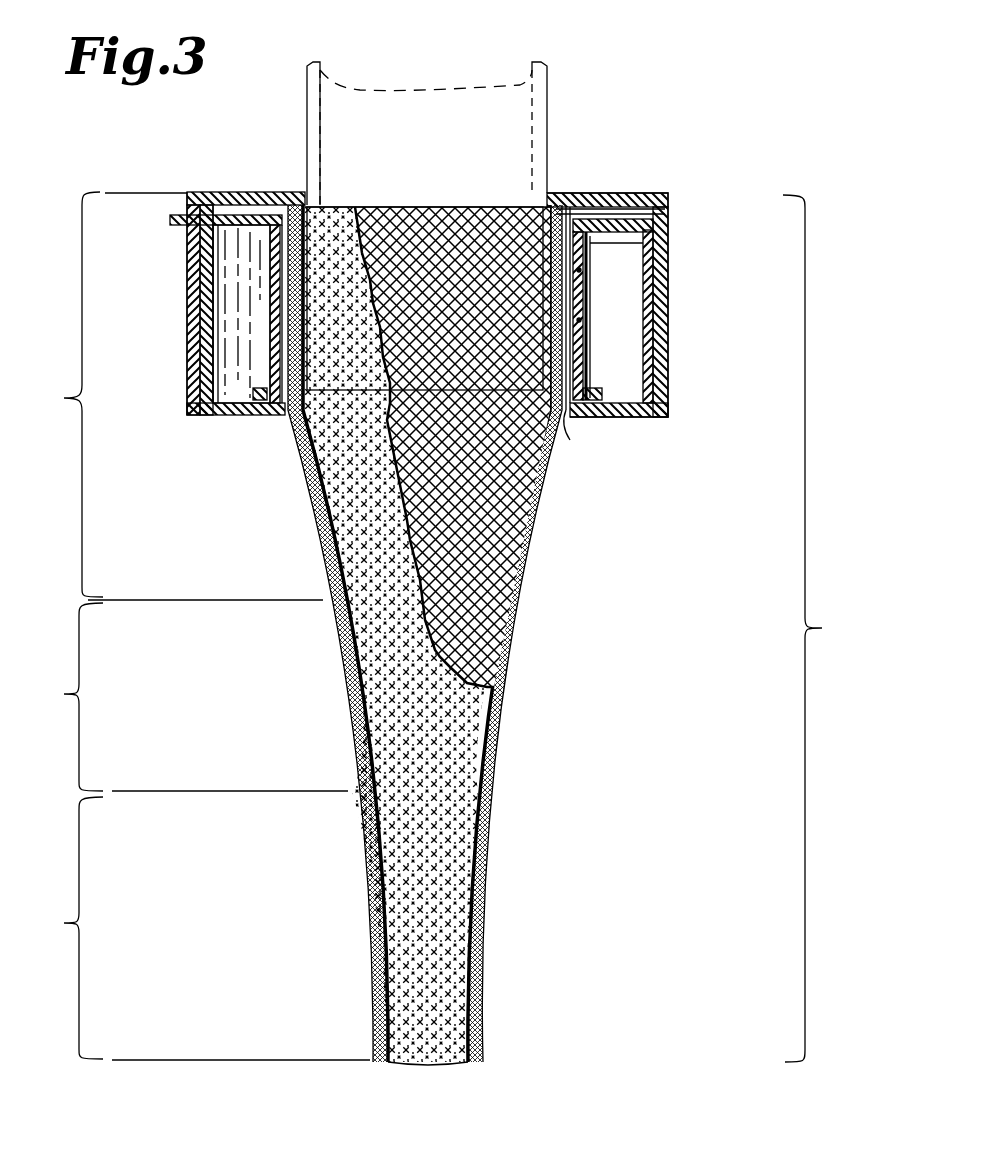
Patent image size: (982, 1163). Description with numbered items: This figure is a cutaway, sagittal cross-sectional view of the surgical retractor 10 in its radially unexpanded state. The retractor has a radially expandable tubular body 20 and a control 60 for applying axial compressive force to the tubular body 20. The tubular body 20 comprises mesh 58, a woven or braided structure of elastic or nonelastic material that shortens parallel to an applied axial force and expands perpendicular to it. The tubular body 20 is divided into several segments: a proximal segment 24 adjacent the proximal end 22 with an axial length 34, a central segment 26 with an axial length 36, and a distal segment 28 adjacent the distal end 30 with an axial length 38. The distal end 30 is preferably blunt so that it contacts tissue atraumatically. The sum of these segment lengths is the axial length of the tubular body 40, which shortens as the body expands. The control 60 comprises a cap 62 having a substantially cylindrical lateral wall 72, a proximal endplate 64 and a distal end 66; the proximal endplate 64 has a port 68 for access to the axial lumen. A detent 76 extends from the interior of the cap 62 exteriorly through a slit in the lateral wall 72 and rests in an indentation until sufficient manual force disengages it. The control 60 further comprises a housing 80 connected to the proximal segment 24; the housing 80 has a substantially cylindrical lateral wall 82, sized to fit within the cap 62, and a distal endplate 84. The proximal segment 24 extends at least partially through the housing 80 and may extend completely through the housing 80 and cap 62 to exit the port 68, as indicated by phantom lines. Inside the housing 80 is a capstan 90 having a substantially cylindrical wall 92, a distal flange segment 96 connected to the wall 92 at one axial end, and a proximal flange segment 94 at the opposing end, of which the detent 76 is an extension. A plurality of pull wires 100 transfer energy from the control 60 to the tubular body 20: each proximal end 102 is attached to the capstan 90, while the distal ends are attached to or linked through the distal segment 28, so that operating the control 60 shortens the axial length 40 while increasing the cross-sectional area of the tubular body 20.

The surgical retractor 10 is at (714, 102).
The tubular body 20 is at (345, 677).
The proximal end 22 is at (450, 205).
The proximal segment 24 is at (430, 420).
The central segment 26 is at (470, 690).
The distal segment 28 is at (423, 900).
The distal end 30 is at (440, 1060).
The axial length of proximal segment 34 is at (64, 394).
The axial length of central segment 36 is at (63, 697).
The axial length of distal segment 38 is at (63, 928).
The axial length of tubular body 40 is at (820, 628).
The mesh 58 is at (440, 603).
The control 60 is at (668, 272).
The cap 62 is at (670, 367).
The proximal endplate 64 is at (622, 193).
The distal end 66 is at (665, 415).
The port 68 is at (347, 190).
The lateral wall 72 is at (195, 277).
The detent 76 is at (175, 215).
The housing 80 is at (200, 332).
The lateral wall 82 is at (195, 372).
The distal endplate 84 is at (217, 407).
The capstan 90 is at (585, 305).
The cylindrical wall 92 is at (582, 340).
The proximal flange segment 94 is at (237, 222).
The distal flange segment 96 is at (253, 408).
The pull wires 100 is at (576, 426).
The proximal end of pull wire 102 is at (585, 243).